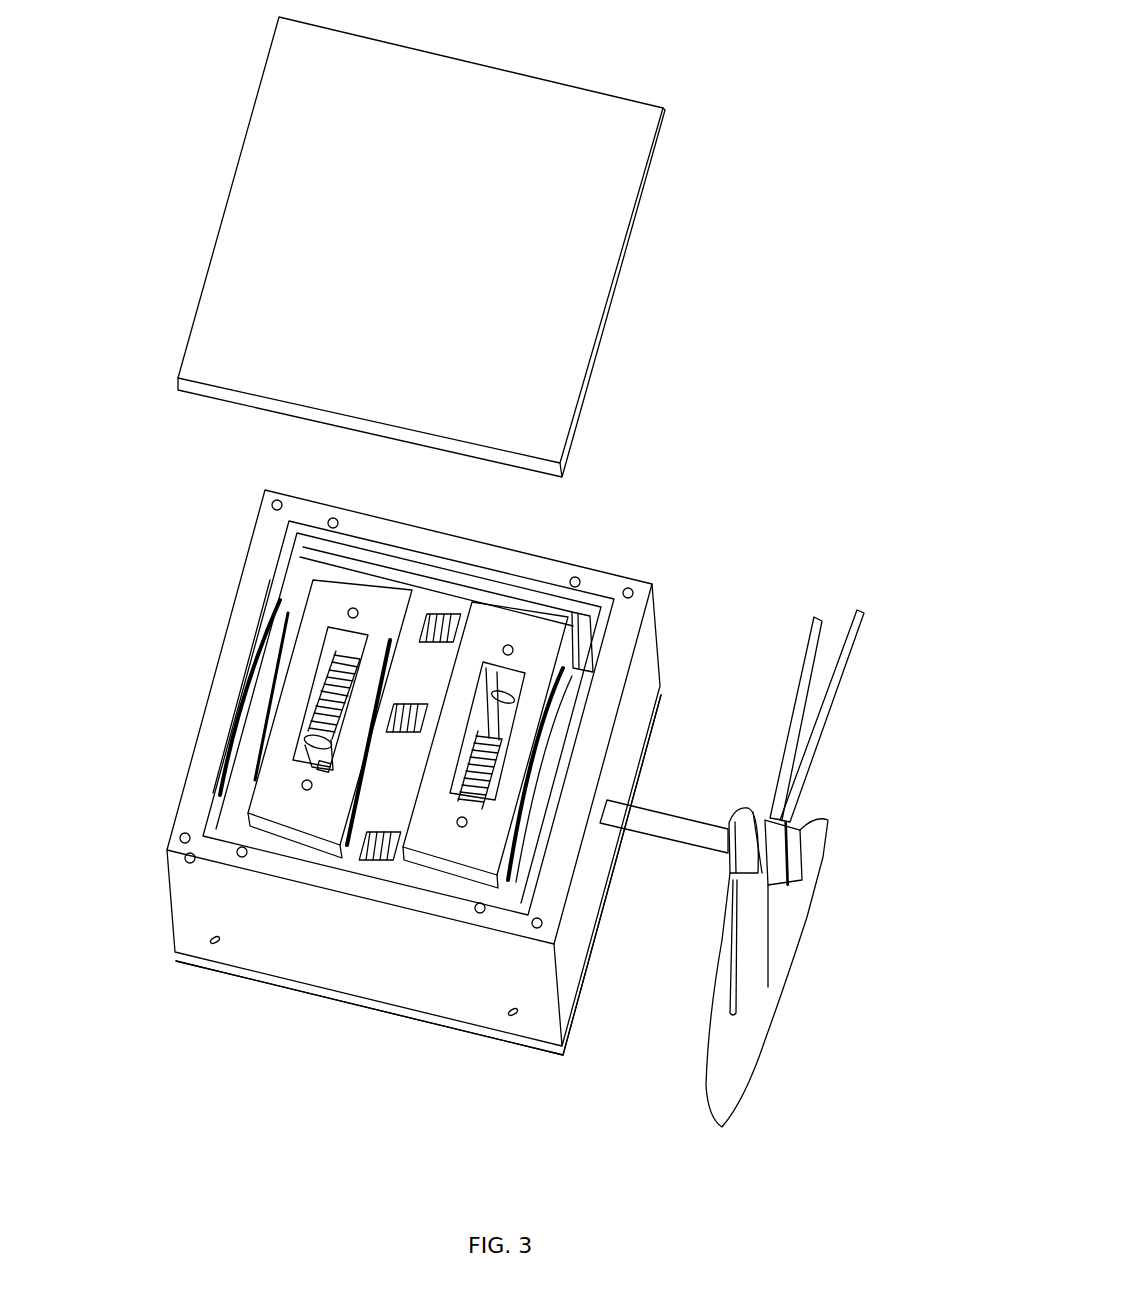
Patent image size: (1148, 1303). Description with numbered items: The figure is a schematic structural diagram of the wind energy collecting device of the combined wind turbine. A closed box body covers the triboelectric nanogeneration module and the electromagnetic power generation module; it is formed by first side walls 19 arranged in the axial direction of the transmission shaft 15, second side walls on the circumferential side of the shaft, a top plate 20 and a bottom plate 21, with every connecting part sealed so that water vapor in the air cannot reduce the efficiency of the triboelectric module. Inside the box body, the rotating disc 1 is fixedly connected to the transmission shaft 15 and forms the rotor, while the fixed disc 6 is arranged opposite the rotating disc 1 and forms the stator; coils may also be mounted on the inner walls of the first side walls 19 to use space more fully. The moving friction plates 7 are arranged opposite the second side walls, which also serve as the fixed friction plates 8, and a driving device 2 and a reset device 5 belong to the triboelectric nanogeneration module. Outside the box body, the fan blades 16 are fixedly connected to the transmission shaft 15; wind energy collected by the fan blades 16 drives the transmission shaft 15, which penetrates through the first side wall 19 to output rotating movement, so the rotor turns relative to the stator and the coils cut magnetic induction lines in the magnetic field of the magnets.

The rotating disc 1 is at (413, 688).
The driving device 2 is at (266, 719).
The reset device 5 is at (317, 715).
The fixed disc 6 is at (327, 630).
The moving friction plate 7 is at (437, 587).
The fixed friction plate 8 is at (267, 492).
The transmission shaft 15 is at (637, 822).
The fan blade 16 is at (753, 898).
The first side wall 19 is at (183, 830).
The top plate 20 is at (525, 320).
The bottom plate 21 is at (470, 1027).